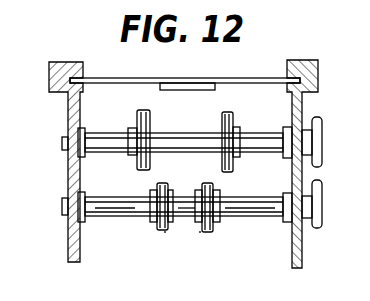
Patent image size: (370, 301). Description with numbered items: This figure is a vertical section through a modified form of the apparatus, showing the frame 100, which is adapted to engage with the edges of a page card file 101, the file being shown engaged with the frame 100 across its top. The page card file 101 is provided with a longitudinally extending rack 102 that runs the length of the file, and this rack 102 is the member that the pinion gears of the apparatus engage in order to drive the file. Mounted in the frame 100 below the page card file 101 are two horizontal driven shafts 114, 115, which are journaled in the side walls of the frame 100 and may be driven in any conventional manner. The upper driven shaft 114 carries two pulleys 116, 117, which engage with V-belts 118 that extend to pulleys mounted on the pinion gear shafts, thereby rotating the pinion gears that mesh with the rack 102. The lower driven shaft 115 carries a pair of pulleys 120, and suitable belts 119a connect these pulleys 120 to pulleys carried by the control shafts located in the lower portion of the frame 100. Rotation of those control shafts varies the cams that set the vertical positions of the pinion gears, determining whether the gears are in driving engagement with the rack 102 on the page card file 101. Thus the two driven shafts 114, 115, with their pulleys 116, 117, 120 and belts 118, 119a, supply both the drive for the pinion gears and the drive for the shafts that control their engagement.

The frame 100 is at (68, 112).
The page card file 101 is at (130, 78).
The rack 102 is at (160, 88).
The driven shaft 114 is at (165, 133).
The driven shaft 115 is at (125, 216).
The pulley 116 is at (137, 164).
The pulley 117 is at (233, 160).
The V-belt 118 is at (228, 112).
The belt 119a is at (178, 246).
The pulley 120 is at (200, 190).